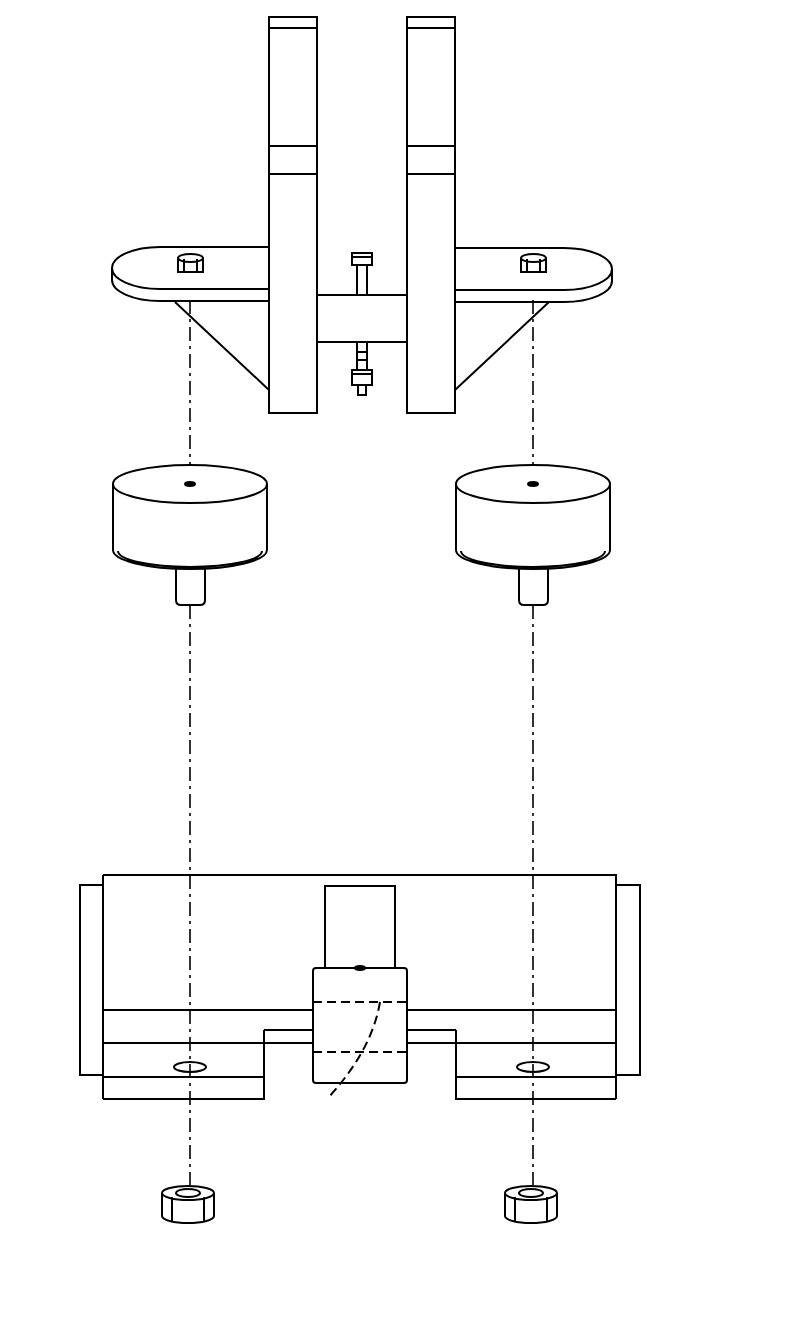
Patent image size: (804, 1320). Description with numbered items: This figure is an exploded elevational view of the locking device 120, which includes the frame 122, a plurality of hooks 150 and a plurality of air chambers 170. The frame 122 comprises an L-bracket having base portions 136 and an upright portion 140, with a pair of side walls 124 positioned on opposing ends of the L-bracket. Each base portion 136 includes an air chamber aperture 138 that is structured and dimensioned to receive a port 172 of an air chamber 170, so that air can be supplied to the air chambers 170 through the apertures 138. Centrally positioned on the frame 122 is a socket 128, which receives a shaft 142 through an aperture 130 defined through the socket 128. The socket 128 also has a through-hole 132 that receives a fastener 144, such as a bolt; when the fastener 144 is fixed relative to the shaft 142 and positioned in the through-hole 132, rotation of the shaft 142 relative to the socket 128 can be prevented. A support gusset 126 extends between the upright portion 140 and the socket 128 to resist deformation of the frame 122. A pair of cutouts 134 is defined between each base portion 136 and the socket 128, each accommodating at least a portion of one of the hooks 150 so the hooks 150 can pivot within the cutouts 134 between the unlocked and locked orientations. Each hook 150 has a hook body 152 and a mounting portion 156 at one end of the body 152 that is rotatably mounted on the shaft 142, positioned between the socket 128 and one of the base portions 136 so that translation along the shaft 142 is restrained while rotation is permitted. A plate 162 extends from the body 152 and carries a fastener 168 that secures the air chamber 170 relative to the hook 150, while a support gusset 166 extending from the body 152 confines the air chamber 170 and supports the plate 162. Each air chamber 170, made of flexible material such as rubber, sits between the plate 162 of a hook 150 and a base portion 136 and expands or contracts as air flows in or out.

The locking device 120 is at (650, 88).
The frame 122 is at (255, 888).
The side walls 124 is at (93, 978).
The support gusset 126 is at (362, 898).
The socket 128 is at (398, 1078).
The aperture 130 is at (348, 1066).
The through-hole 132 is at (361, 965).
The cutouts 134 is at (285, 1092).
The base portions 136 is at (128, 1088).
The air chamber aperture 138 is at (180, 1076).
The upright portion 140 is at (150, 888).
The shaft 142 is at (349, 340).
The fastener 144 is at (363, 251).
The hooks 150 is at (310, 78).
The hook body 152 is at (277, 185).
The mounting portion 156 is at (393, 397).
The plate 162 is at (136, 260).
The support gusset 166 is at (232, 340).
The fastener 168 is at (189, 252).
The air chambers 170 is at (127, 526).
The port 172 is at (180, 595).